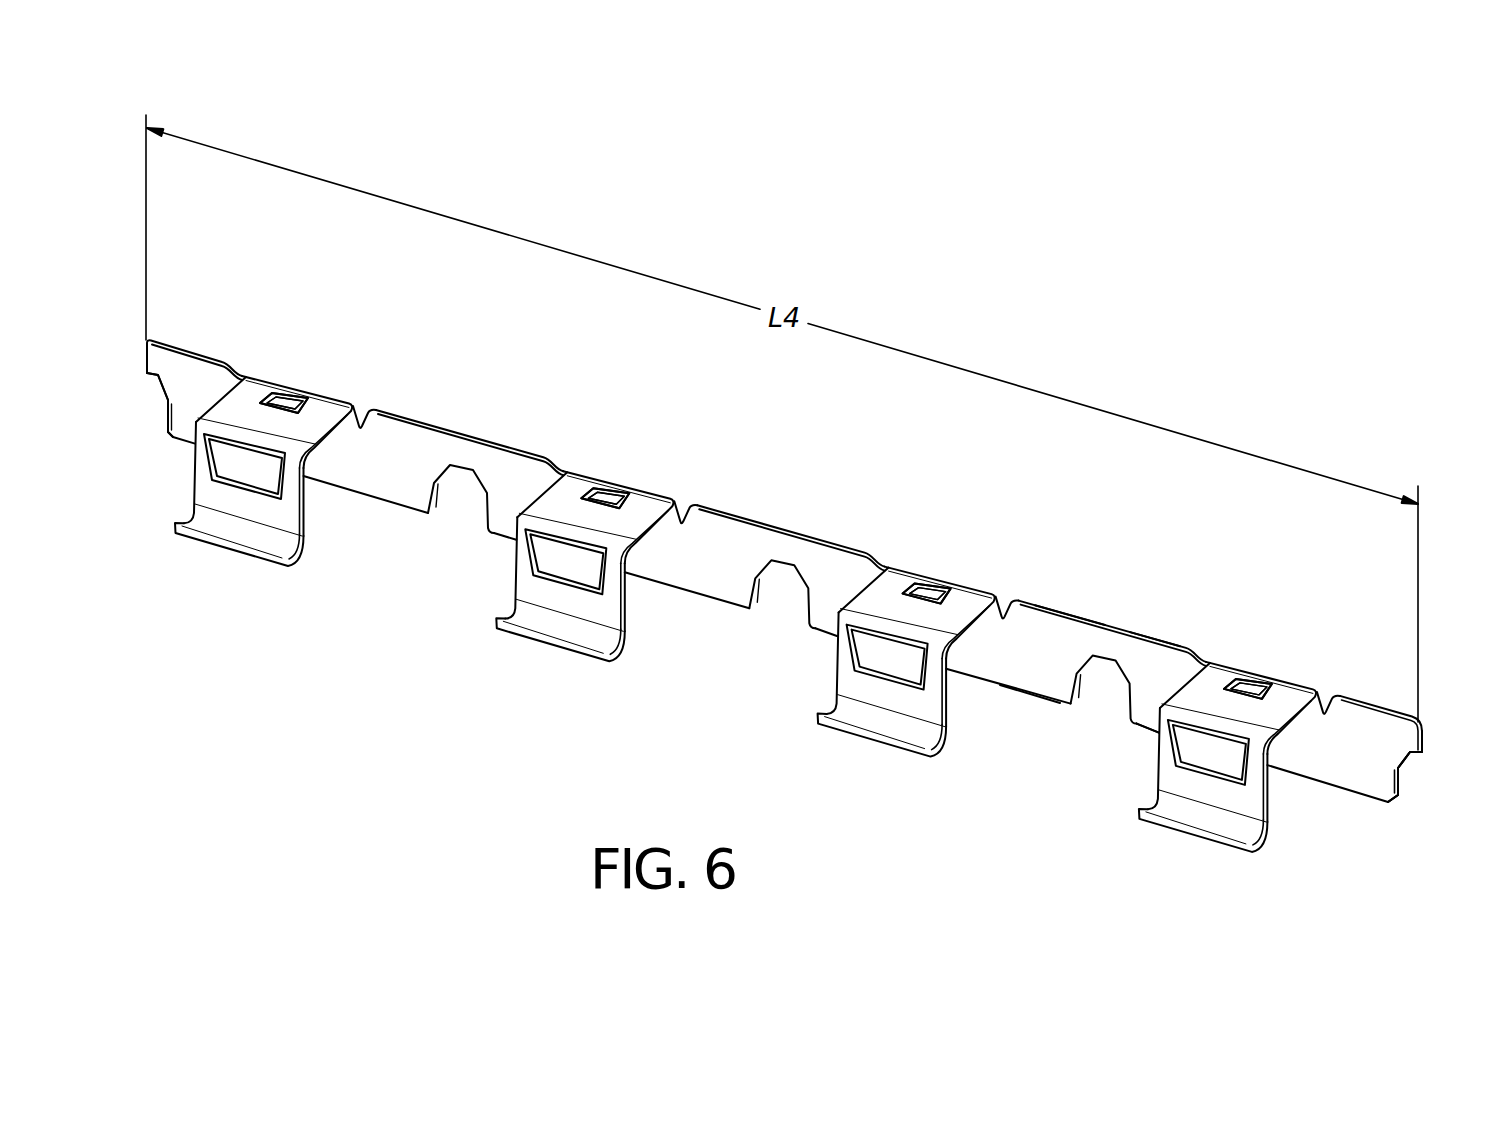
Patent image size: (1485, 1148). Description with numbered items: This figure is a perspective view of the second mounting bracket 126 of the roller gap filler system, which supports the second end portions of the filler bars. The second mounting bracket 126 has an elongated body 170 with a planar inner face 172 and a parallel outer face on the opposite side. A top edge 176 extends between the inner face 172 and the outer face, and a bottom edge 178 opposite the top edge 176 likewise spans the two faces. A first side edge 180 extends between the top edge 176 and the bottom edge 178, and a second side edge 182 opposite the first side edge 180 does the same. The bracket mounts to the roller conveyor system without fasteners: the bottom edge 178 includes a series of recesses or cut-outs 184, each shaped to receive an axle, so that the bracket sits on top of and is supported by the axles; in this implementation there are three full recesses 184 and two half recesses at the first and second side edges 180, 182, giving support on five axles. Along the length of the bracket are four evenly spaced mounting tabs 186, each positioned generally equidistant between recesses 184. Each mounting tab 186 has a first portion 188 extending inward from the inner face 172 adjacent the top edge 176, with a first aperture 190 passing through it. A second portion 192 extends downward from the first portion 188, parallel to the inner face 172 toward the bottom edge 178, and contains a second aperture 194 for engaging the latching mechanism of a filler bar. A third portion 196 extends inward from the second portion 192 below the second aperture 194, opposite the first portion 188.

The second mounting bracket 126 is at (956, 328).
The elongated body 170 is at (779, 529).
The inner face 172 is at (1152, 667).
The top edge 176 is at (1070, 615).
The bottom edge 178 is at (1030, 700).
The first side edge 180 is at (1425, 740).
The second side edge 182 is at (146, 366).
The recess 184 is at (138, 407).
The mounting tab 186 is at (785, 521).
The first portion 188 is at (782, 520).
The first aperture 190 is at (762, 494).
The second portion 192 is at (759, 634).
The second aperture 194 is at (725, 658).
The third portion 196 is at (694, 694).